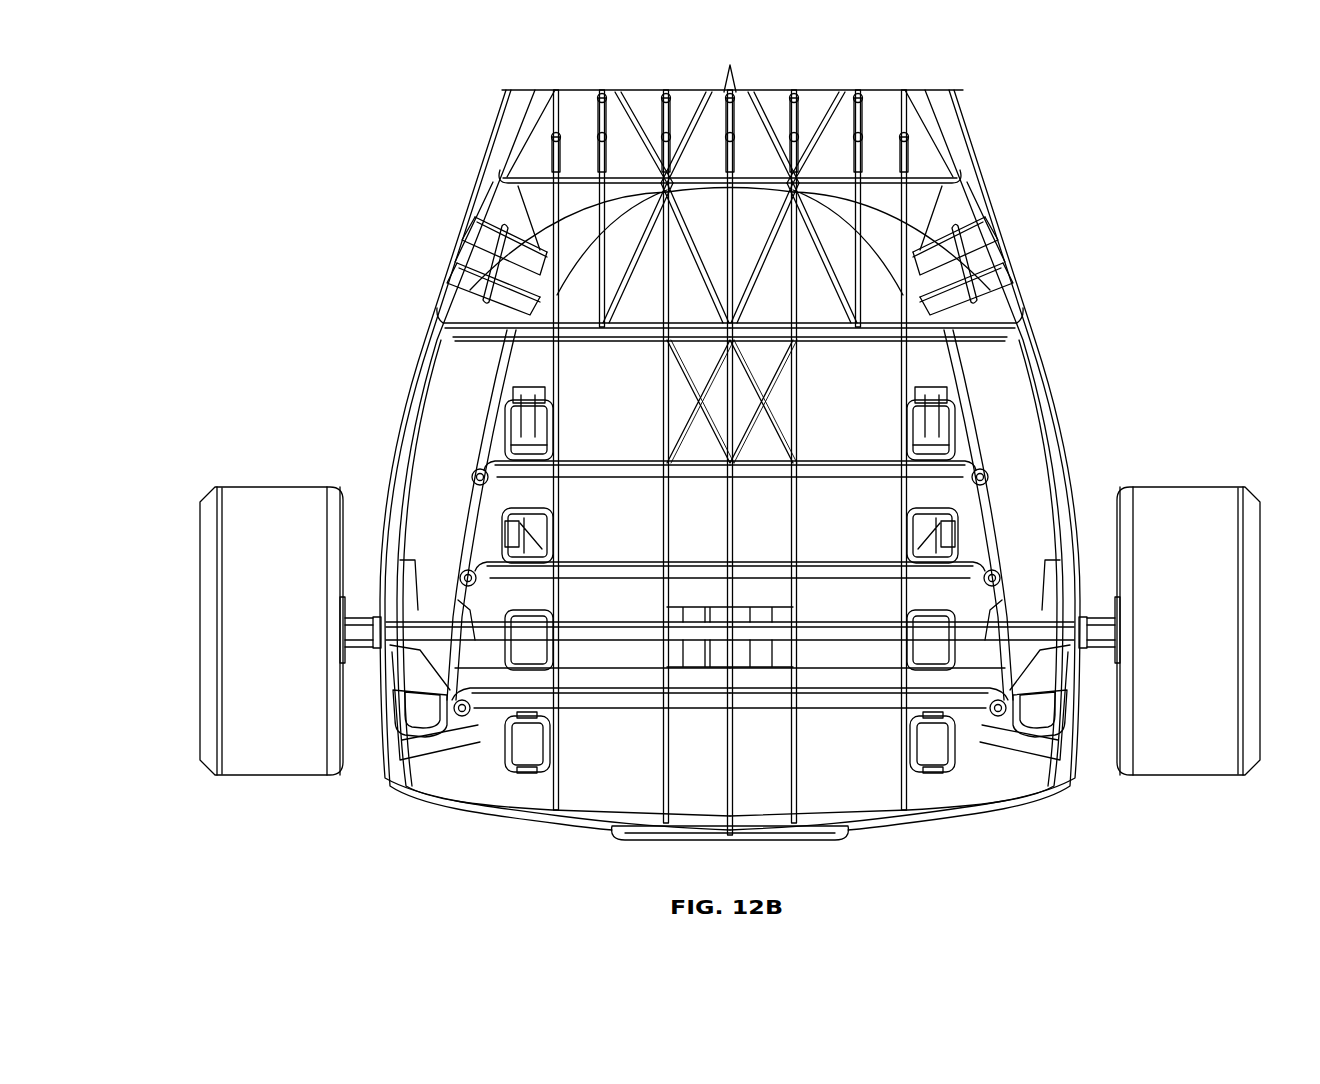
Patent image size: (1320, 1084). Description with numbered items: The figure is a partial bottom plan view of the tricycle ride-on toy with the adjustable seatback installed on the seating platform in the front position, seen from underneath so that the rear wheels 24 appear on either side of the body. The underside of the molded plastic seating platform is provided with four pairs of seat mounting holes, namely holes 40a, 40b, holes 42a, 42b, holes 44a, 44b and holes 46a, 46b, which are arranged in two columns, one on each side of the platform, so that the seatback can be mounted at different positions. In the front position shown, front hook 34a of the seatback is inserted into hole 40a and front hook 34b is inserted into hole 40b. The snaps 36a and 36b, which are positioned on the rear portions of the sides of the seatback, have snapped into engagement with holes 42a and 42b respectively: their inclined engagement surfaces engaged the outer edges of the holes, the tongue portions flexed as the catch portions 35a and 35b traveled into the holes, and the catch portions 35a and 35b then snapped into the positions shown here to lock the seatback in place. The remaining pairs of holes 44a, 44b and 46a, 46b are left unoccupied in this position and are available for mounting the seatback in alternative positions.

The rear wheels 24 is at (245, 615).
The front hook 34a is at (527, 397).
The front hook 34b is at (933, 397).
The seat mounting hole 40a is at (507, 432).
The seat mounting hole 40b is at (953, 432).
The seat mounting hole 42a is at (474, 471).
The seat mounting hole 42b is at (986, 471).
The snap 36a is at (503, 530).
The snap 36b is at (957, 530).
The catch portion 35a is at (503, 545).
The catch portion 35b is at (957, 545).
The seat mounting hole 44a is at (553, 660).
The seat mounting hole 44b is at (907, 660).
The seat mounting hole 46a is at (532, 773).
The seat mounting hole 46b is at (928, 773).